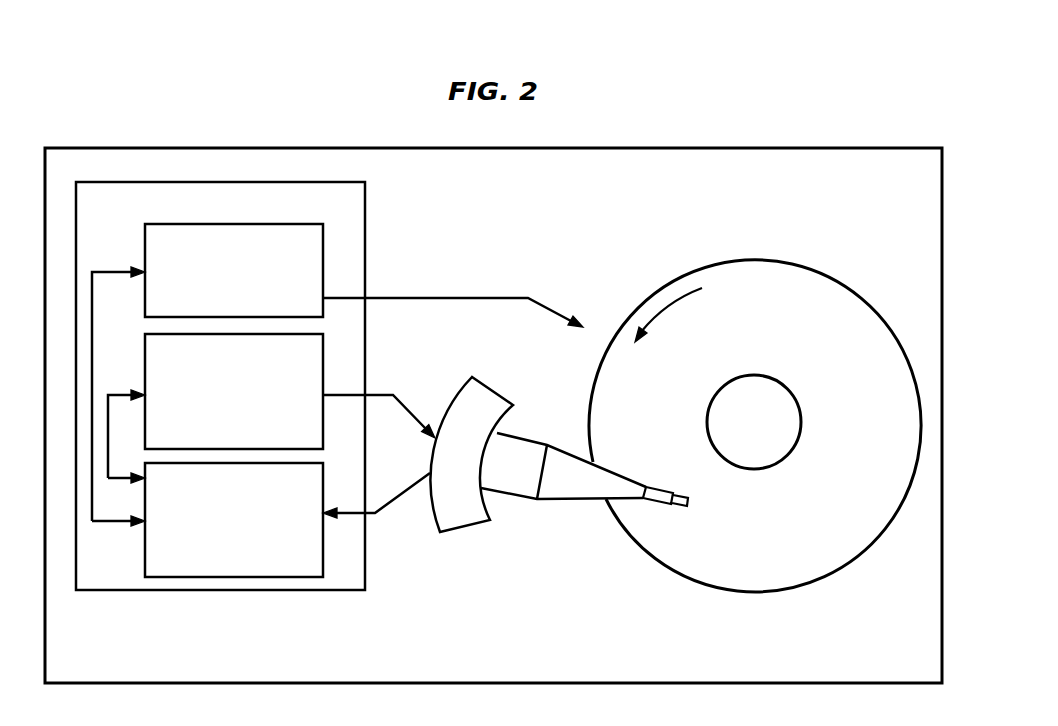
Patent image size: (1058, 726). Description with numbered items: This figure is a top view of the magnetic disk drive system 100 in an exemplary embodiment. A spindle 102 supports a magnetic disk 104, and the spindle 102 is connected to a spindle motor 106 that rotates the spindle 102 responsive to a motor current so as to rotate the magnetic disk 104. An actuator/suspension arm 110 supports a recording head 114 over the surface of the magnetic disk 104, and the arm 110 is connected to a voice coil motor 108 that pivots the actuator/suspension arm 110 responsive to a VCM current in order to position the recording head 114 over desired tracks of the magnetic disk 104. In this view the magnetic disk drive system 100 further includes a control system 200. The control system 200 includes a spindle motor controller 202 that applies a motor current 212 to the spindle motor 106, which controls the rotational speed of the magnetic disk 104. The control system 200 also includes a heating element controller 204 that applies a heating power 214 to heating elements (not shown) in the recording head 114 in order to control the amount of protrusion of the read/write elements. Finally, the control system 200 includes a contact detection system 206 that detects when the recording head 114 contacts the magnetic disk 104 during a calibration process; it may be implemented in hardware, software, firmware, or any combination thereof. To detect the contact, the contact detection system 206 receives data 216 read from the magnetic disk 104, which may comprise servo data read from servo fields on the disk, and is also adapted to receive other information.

The magnetic disk drive system 100 is at (445, 664).
The spindle 102 is at (799, 425).
The magnetic disk 104 is at (790, 322).
The spindle motor 106 is at (467, 268).
The voice coil motor 108 is at (487, 397).
The actuator/suspension arm 110 is at (579, 500).
The recording head 114 is at (693, 502).
The control system 200 is at (345, 212).
The spindle motor controller 202 is at (252, 307).
The heating element controller 204 is at (252, 439).
The contact detection system 206 is at (252, 569).
The motor current 212 is at (403, 299).
The heating power 214 is at (405, 405).
The data read from magnetic disk 216 is at (390, 503).